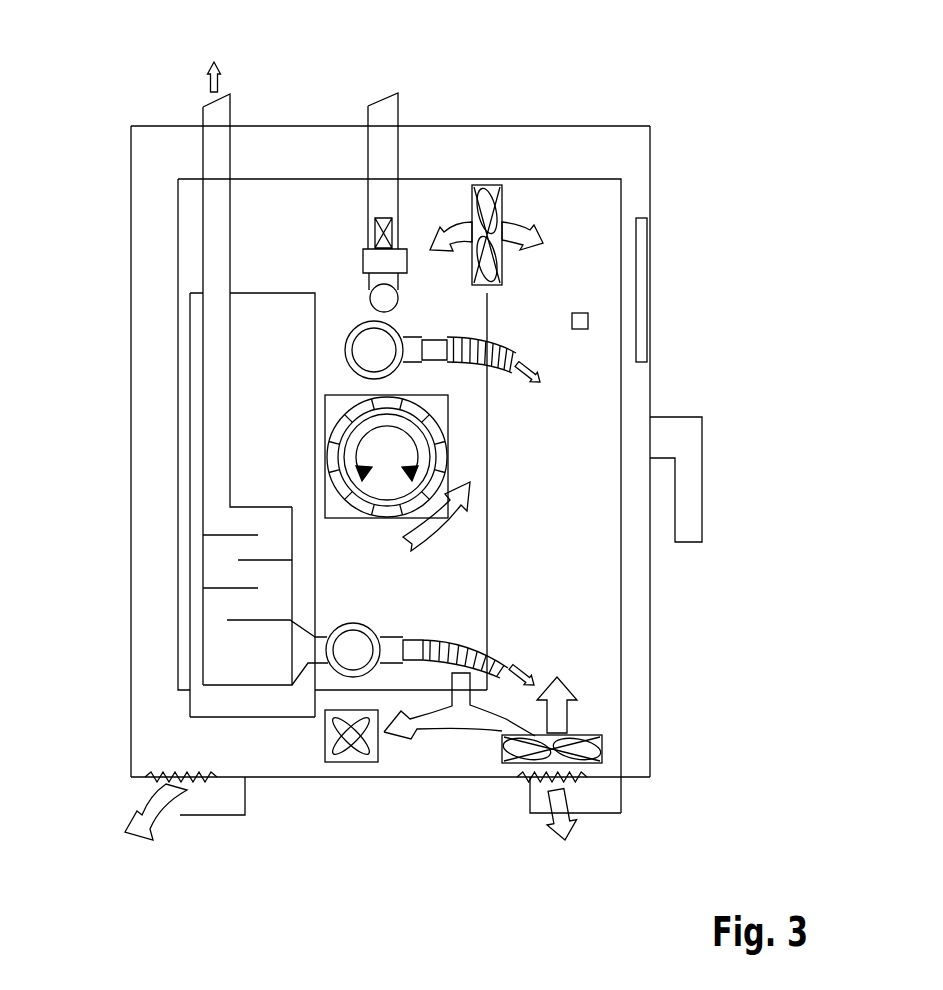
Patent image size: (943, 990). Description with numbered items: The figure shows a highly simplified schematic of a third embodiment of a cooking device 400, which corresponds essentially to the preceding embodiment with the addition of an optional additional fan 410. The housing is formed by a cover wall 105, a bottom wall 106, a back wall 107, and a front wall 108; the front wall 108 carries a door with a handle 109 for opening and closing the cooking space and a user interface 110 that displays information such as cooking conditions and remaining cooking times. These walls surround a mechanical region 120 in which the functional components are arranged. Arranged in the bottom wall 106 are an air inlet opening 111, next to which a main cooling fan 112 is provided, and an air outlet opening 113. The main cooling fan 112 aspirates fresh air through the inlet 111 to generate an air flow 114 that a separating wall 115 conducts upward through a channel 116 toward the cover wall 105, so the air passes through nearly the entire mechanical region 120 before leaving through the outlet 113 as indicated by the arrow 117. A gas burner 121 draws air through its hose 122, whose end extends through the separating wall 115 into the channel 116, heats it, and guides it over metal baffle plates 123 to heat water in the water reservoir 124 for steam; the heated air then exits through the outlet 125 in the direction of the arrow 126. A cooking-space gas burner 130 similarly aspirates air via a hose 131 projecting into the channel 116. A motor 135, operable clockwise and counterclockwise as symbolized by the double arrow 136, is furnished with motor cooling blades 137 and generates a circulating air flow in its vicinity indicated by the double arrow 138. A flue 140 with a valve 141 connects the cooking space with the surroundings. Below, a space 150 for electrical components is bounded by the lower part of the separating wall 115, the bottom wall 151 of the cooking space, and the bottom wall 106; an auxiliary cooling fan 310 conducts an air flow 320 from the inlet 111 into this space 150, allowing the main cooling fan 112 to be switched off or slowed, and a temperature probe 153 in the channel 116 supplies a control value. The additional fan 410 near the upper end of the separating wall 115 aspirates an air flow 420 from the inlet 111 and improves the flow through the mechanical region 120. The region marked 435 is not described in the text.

The cooking device 400 is at (647, 30).
The cover wall 105 is at (452, 123).
The bottom wall 106 is at (327, 780).
The back wall 107 is at (130, 258).
The front wall 108 is at (652, 372).
The handle 109 is at (703, 477).
The user interface 110 is at (645, 258).
The air inlet opening 111 is at (580, 780).
The main cooling fan 112 is at (600, 743).
The air outlet opening 113 is at (153, 782).
The air flow 114 is at (567, 683).
The separating wall 115 is at (492, 302).
The channel 116 is at (575, 508).
The arrow 117 is at (173, 827).
The mechanical region 120 is at (300, 203).
The gas burner 121 is at (353, 660).
The hose 122 is at (517, 663).
The metal baffle plates 123 is at (217, 605).
The water reservoir 124 is at (195, 345).
The outlet 125 is at (208, 100).
The arrow 126 is at (223, 68).
The cooking-space gas burner 130 is at (392, 325).
The hose 131 is at (544, 365).
The motor 135 is at (377, 490).
The double arrow 136 is at (450, 430).
The motor cooling blades 137 is at (330, 429).
The double arrow 138 is at (457, 523).
The flue 140 is at (380, 98).
The valve 141 is at (368, 230).
The space for electrical components 150 is at (287, 745).
The bottom wall of the cooking space 151 is at (420, 730).
The temperature probe 153 is at (593, 322).
The auxiliary cooling fan 310 is at (360, 763).
The air flow 320 is at (457, 727).
The additional fan 410 is at (475, 187).
The air flow 420 is at (522, 220).
The air gap 435 is at (583, 613).